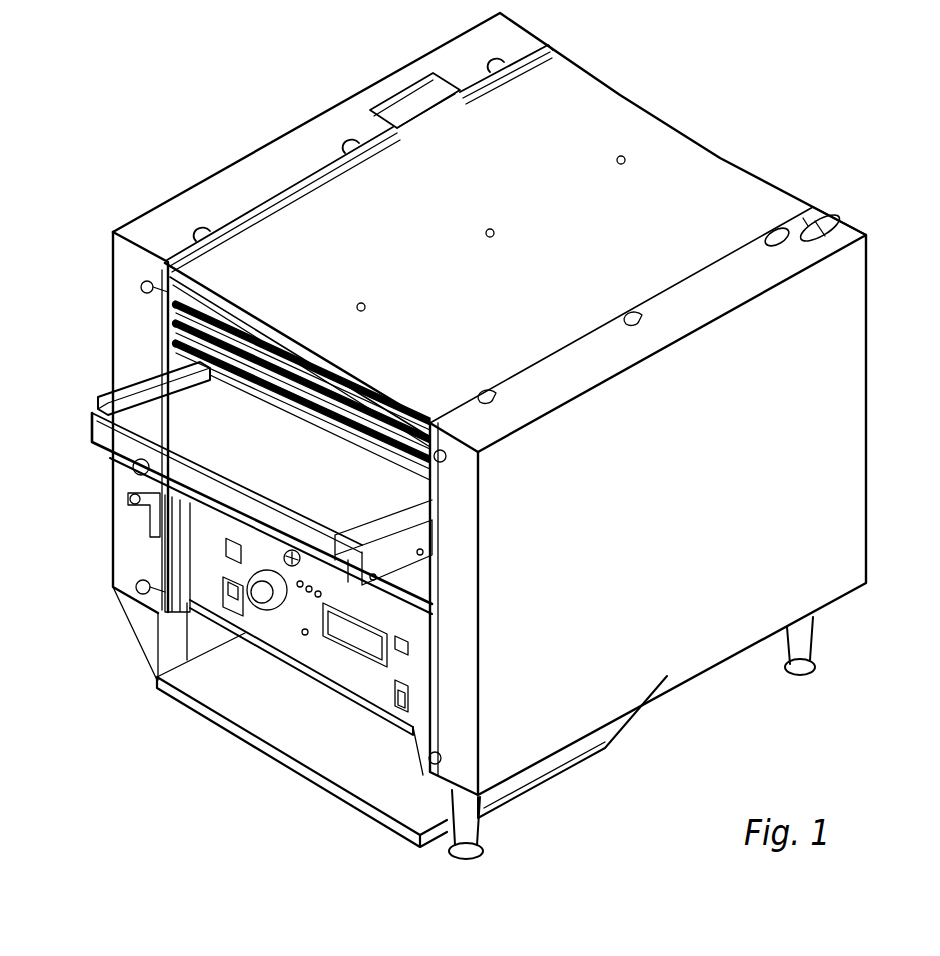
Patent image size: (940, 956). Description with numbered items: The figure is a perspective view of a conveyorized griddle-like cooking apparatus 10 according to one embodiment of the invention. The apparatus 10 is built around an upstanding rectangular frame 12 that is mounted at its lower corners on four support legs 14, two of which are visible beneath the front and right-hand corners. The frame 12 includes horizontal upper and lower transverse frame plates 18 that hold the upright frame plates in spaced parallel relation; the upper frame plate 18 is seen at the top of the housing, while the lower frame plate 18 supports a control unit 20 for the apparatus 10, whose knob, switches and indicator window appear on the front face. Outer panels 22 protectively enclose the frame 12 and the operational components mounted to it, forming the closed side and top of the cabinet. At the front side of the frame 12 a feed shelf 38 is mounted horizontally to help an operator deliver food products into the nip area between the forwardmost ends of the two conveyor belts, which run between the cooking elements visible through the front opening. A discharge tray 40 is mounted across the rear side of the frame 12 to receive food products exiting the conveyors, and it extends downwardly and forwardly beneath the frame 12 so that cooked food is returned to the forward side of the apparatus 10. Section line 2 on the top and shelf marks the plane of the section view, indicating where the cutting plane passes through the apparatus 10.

The conveyorized griddle apparatus 10 is at (242, 140).
The upstanding rectangular frame 12 is at (668, 672).
The support legs 14 is at (800, 632).
The transverse frame plates 18 is at (463, 363).
The control unit 20 is at (327, 657).
The outer panels 22 is at (113, 282).
The feed shelf 38 is at (294, 482).
The discharge tray 40 is at (340, 750).
The section line of Fig. 2 is at (685, 157).